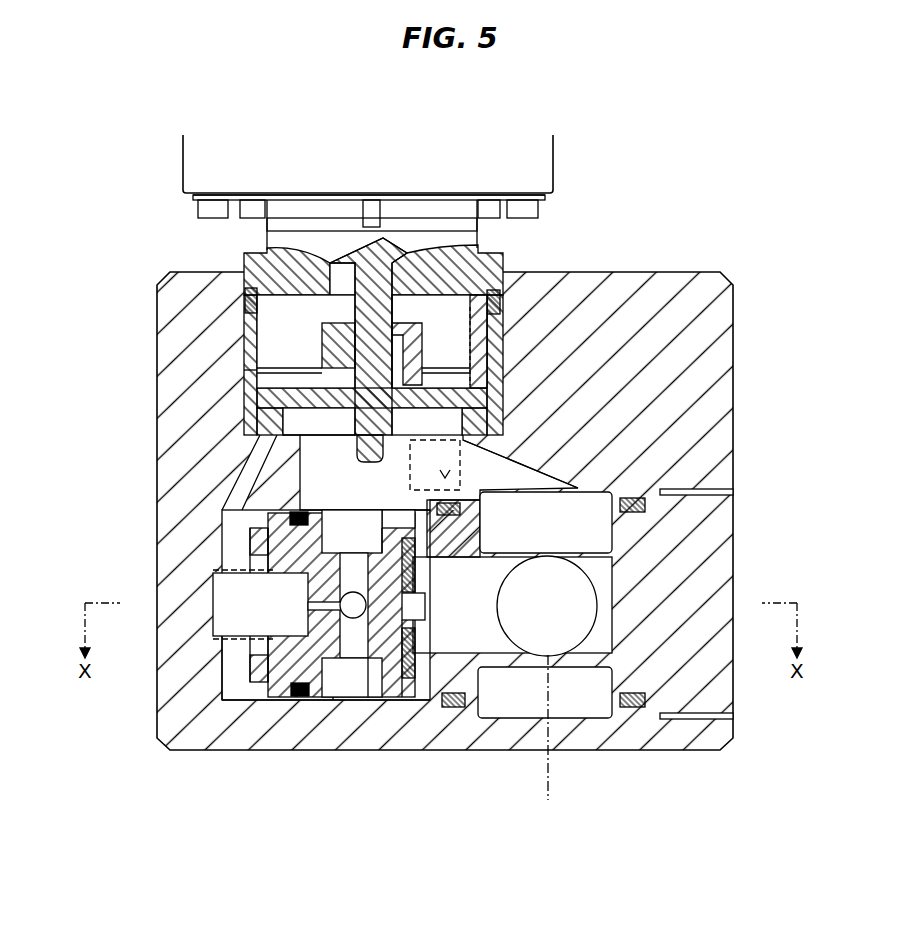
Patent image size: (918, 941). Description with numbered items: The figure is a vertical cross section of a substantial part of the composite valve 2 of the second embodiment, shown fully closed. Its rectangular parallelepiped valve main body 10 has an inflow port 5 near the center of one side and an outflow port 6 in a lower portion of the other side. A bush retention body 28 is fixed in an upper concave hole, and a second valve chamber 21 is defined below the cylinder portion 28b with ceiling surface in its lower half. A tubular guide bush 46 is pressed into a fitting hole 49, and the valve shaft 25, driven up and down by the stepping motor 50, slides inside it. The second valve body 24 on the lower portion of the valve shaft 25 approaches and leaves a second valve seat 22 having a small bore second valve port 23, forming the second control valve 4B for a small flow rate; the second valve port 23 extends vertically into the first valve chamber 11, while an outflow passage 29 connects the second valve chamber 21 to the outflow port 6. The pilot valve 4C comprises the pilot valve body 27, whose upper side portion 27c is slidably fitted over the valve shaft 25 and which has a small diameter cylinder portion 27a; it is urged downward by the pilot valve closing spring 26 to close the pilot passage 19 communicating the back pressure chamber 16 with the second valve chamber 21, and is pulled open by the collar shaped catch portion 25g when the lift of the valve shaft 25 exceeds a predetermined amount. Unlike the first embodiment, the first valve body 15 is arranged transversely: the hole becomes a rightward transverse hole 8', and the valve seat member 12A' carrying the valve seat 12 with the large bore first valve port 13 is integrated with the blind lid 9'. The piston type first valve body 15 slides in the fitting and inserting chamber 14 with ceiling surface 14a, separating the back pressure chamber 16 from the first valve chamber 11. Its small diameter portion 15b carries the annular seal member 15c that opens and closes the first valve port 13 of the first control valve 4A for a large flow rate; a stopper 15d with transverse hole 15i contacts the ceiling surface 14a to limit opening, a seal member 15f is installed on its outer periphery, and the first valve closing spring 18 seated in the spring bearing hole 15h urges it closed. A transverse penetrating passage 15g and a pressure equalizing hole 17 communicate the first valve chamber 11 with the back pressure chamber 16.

The composite valve 2 is at (136, 158).
The stepping motor 50 is at (176, 188).
The tubular guide bush 46 is at (267, 241).
The fitting hole 49 is at (262, 273).
The valve shaft 25 is at (490, 256).
The upper side portion of the pilot valve body 27c is at (488, 260).
The bush retention body 28 is at (503, 297).
The pilot valve 4C is at (490, 328).
The cylinder portion with ceiling surface 28b is at (492, 350).
The small diameter cylinder portion 27a is at (490, 380).
The second control valve 4B is at (488, 408).
The pilot valve body 27 is at (490, 428).
The second valve seat 22 is at (458, 446).
The outflow passage 29 is at (578, 487).
The second valve chamber 21 is at (284, 330).
The collar shaped catch portion 25g is at (345, 370).
The pilot valve closing spring 26 is at (253, 378).
The pilot passage 19 is at (250, 476).
The second valve body 24 is at (350, 437).
The transverse penetrating passage 15g is at (350, 592).
The spring bearing hole 15h is at (303, 545).
The transverse hole 15i is at (250, 530).
The second valve port 23 is at (402, 514).
The first valve closing spring 18 is at (217, 575).
The back pressure chamber 16 is at (230, 605).
The pressure equalizing hole 17 is at (352, 652).
The valve seat 12 is at (421, 647).
The first valve port 13 is at (487, 652).
The blind lid 9' is at (700, 539).
The stopper 15d is at (247, 660).
The ceiling surface 14a is at (220, 690).
The fitting and inserting chamber 14 is at (246, 703).
The seal member (piston ring) 15f is at (300, 700).
The valve main body 10 is at (188, 753).
The first valve body 15 is at (280, 700).
The inflow port 5 is at (333, 700).
The first valve chamber 11 is at (351, 690).
The small diameter portion 15b is at (370, 700).
The first control valve 4A is at (398, 697).
The annular seal member 15c is at (420, 700).
The valve seat member 12A' is at (527, 731).
The outflow port 6 is at (551, 738).
The rightward transverse hole 8' is at (650, 739).